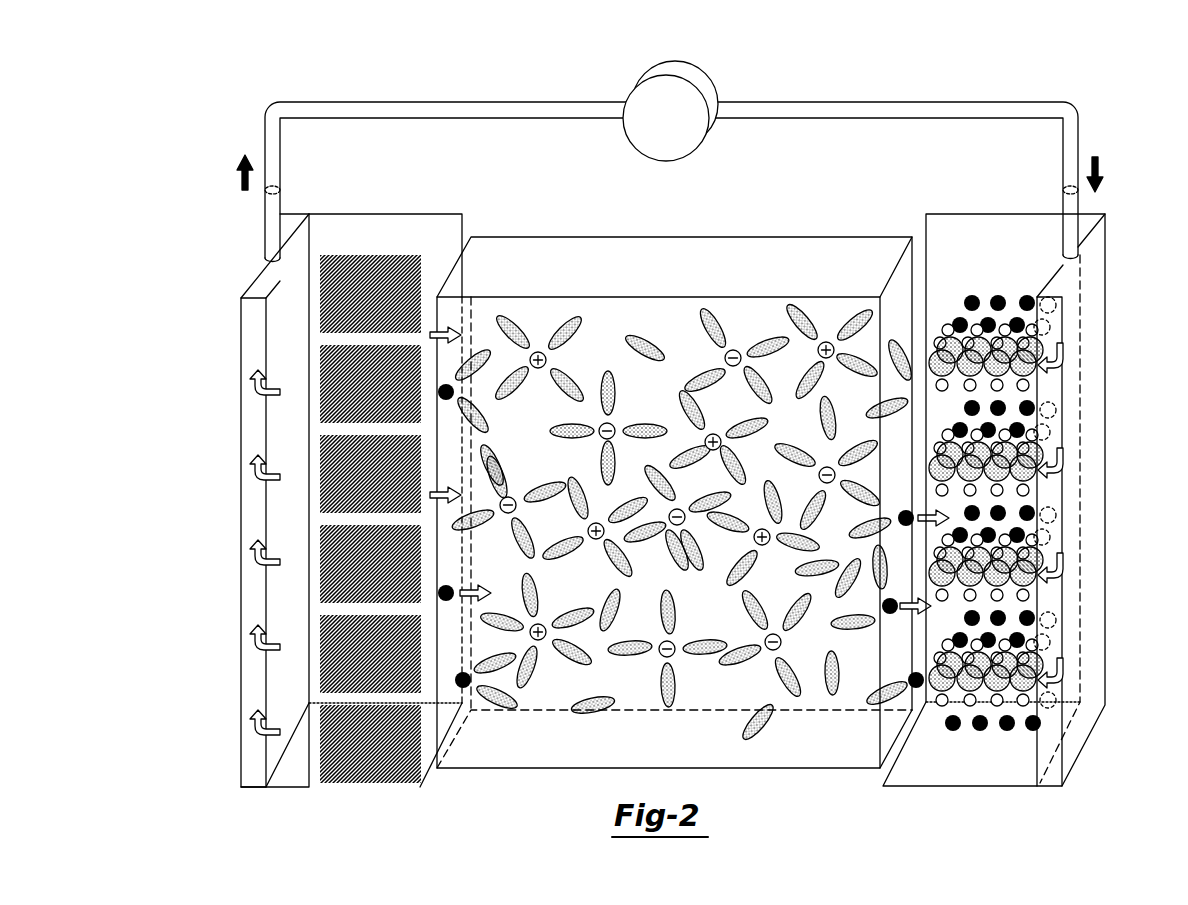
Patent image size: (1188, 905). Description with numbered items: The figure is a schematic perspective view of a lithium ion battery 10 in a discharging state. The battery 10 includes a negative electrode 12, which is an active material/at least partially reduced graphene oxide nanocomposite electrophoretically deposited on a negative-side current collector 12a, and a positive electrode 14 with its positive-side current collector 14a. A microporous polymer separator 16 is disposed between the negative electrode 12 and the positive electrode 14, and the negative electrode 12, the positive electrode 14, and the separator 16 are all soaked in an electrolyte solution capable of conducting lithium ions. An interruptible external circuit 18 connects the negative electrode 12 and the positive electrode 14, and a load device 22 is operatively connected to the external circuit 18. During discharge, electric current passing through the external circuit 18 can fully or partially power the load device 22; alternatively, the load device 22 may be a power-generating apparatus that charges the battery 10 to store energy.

The lithium ion battery 10 is at (1106, 117).
The negative electrode 12 is at (353, 786).
The negative-side current collector 12a is at (253, 763).
The positive electrode 14 is at (922, 792).
The positive-side current collector 14a is at (1052, 782).
The microporous polymer separator 16 is at (462, 770).
The external circuit 18 is at (513, 102).
The load device 22 is at (711, 92).